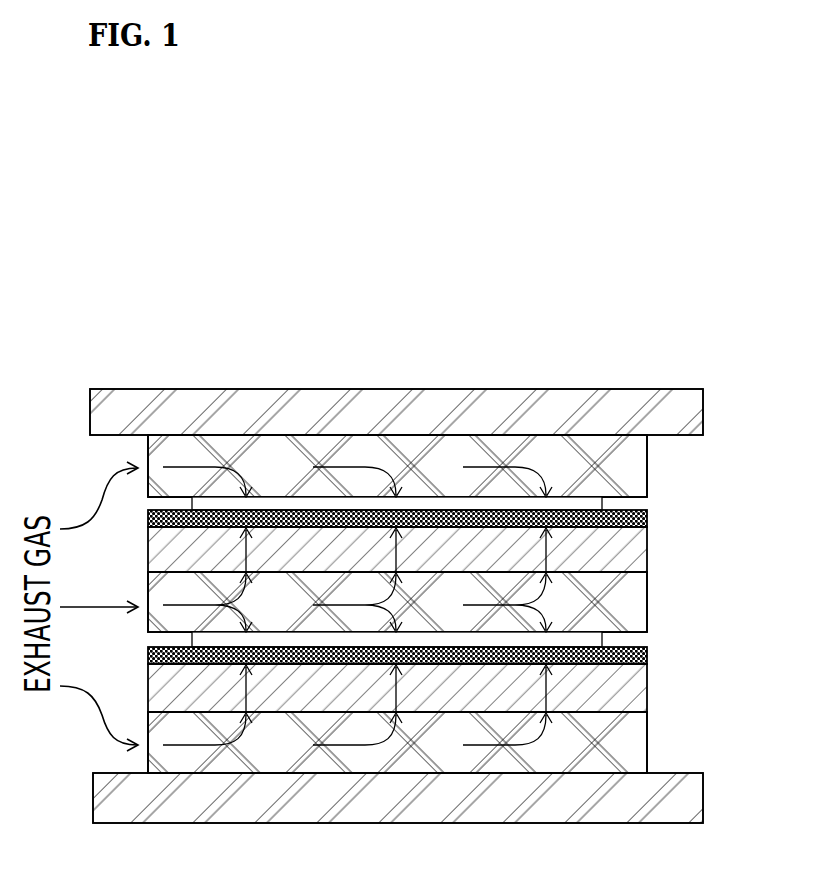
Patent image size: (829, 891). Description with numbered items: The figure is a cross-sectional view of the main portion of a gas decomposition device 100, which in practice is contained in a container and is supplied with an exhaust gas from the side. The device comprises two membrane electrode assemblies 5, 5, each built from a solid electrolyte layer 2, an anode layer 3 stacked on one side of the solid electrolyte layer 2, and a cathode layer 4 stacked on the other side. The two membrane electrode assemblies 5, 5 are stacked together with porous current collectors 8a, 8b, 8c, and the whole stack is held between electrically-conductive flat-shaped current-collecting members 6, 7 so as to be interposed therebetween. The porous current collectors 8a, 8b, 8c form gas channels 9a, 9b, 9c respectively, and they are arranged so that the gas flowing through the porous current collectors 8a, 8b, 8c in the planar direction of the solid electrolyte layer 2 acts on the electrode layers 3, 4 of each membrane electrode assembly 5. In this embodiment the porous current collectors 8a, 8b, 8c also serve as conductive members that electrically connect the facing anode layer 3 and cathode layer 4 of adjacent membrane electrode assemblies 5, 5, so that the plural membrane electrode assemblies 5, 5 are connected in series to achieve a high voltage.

The gas decomposition device 100 is at (438, 333).
The current-collecting member 7 is at (522, 389).
The current-collecting member 6 is at (468, 823).
The porous current collector 8a is at (647, 742).
The porous current collector 8b is at (647, 602).
The porous current collector 8c is at (647, 461).
The gas channel 9a is at (287, 752).
The gas channel 9b is at (168, 593).
The gas channel 9c is at (279, 463).
The cathode layer 4 is at (602, 503).
The solid electrolyte layer 2 is at (647, 520).
The anode layer 3 is at (647, 553).
The membrane electrode assembly 5 is at (730, 483).